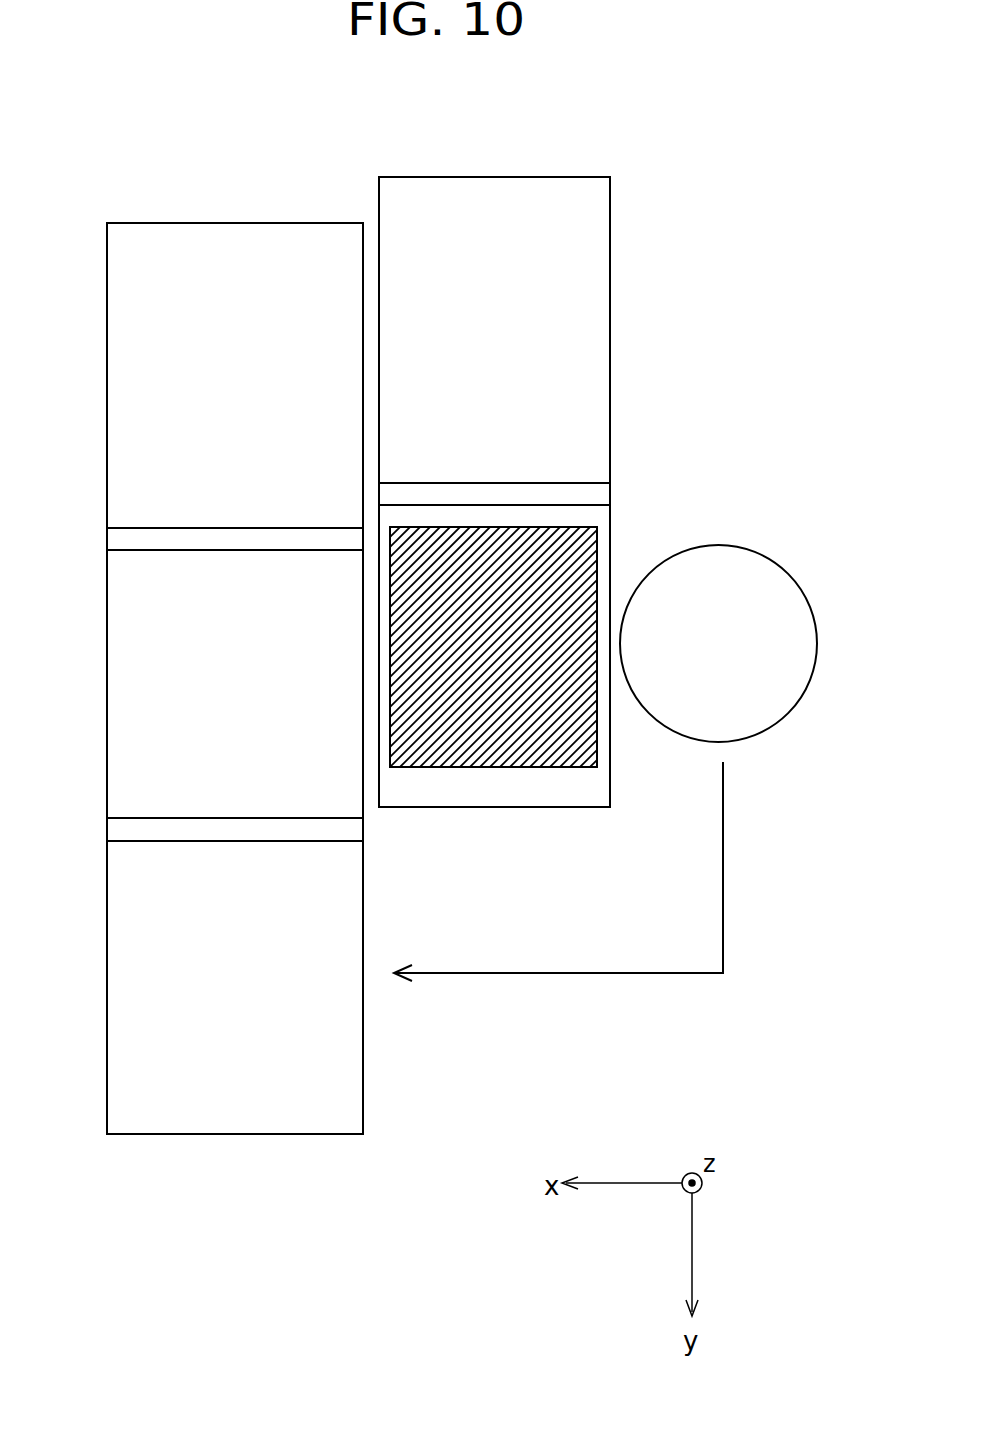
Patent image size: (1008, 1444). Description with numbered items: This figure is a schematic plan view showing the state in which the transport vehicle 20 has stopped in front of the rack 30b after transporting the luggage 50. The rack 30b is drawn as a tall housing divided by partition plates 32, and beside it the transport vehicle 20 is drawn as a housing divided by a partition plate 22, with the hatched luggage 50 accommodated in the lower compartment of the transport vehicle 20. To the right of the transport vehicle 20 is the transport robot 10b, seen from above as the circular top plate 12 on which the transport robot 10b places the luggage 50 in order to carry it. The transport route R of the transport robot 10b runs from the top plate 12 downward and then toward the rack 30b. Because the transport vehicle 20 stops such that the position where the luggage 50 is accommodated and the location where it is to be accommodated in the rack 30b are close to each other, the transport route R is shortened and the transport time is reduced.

The rack 30b is at (198, 191).
The partition plates 32 is at (113, 545).
The transport vehicle 20 is at (466, 164).
The partition plate 22 is at (600, 494).
The luggage 50 is at (465, 773).
The transport robot 10b is at (752, 597).
The top plate 12 is at (818, 637).
The transport route R is at (725, 921).